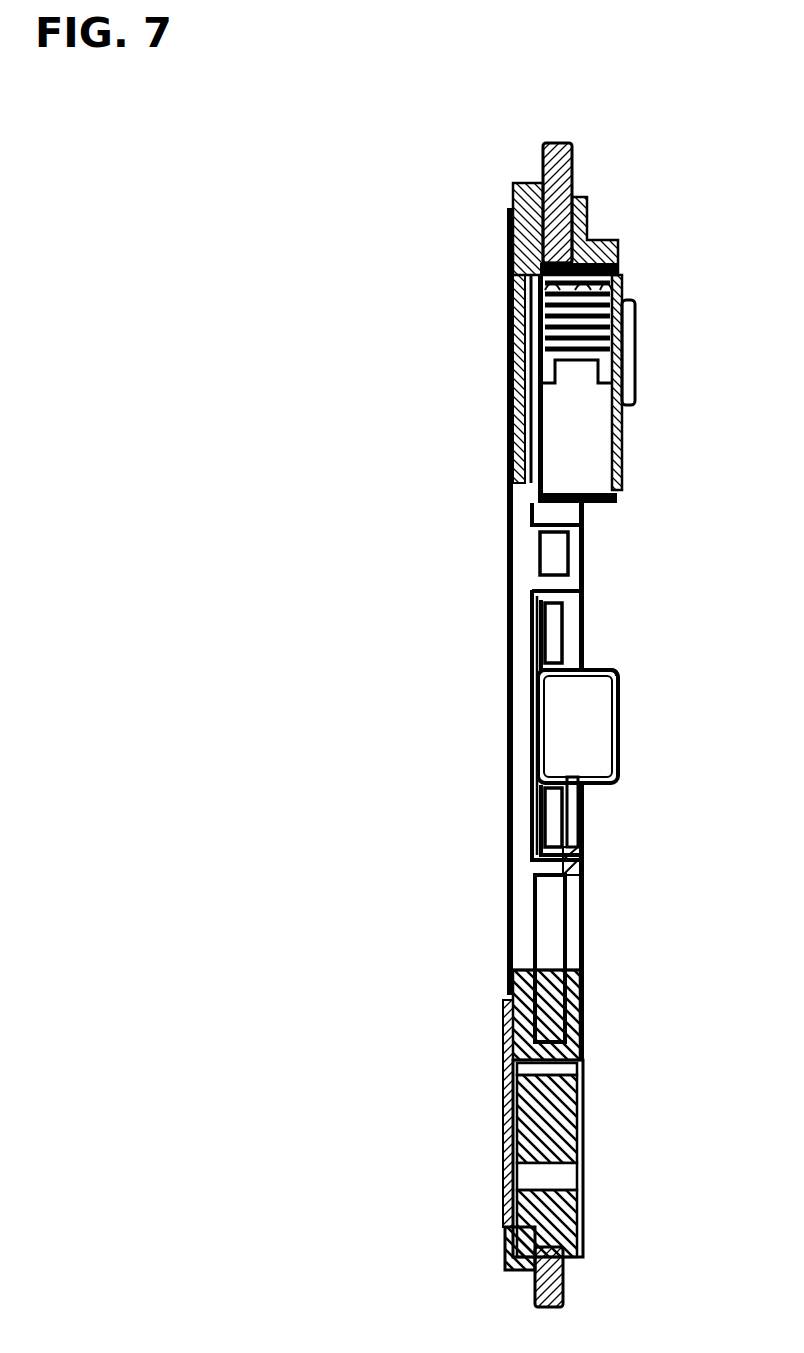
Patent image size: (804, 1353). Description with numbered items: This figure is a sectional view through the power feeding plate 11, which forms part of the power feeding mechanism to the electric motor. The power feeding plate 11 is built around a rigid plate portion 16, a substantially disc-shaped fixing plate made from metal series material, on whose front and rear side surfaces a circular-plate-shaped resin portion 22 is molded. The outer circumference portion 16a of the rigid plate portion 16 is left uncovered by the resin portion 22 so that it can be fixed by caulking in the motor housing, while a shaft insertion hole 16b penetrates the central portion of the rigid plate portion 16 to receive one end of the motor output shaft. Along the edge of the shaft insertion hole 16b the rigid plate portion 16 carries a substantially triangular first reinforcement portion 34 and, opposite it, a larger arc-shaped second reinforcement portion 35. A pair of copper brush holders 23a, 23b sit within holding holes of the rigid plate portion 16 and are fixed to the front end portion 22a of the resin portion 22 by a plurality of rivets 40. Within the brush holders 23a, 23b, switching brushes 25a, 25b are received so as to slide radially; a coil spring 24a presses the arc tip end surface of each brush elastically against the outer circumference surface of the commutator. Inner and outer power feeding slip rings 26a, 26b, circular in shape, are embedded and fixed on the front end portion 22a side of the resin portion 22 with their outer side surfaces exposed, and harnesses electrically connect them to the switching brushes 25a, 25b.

The rigid plate portion 16 is at (577, 157).
The outer circumference portion 16a is at (565, 1283).
The shaft insertion hole 16b is at (550, 968).
The power feeding plate 11 is at (596, 968).
The resin portion 22 is at (583, 1023).
The front end portion 22a is at (518, 532).
The brush holder 23a is at (622, 459).
The brush holder 23b is at (620, 722).
The coil spring 24a is at (635, 322).
The switching brush 25a is at (588, 413).
The switching brush 25b is at (577, 697).
The inner power feeding slip ring 26a is at (510, 388).
The outer power feeding slip ring 26b is at (508, 256).
The reinforcement portion 34 is at (557, 548).
The second reinforcement portion 35 is at (553, 920).
The rivet 40 is at (560, 617).